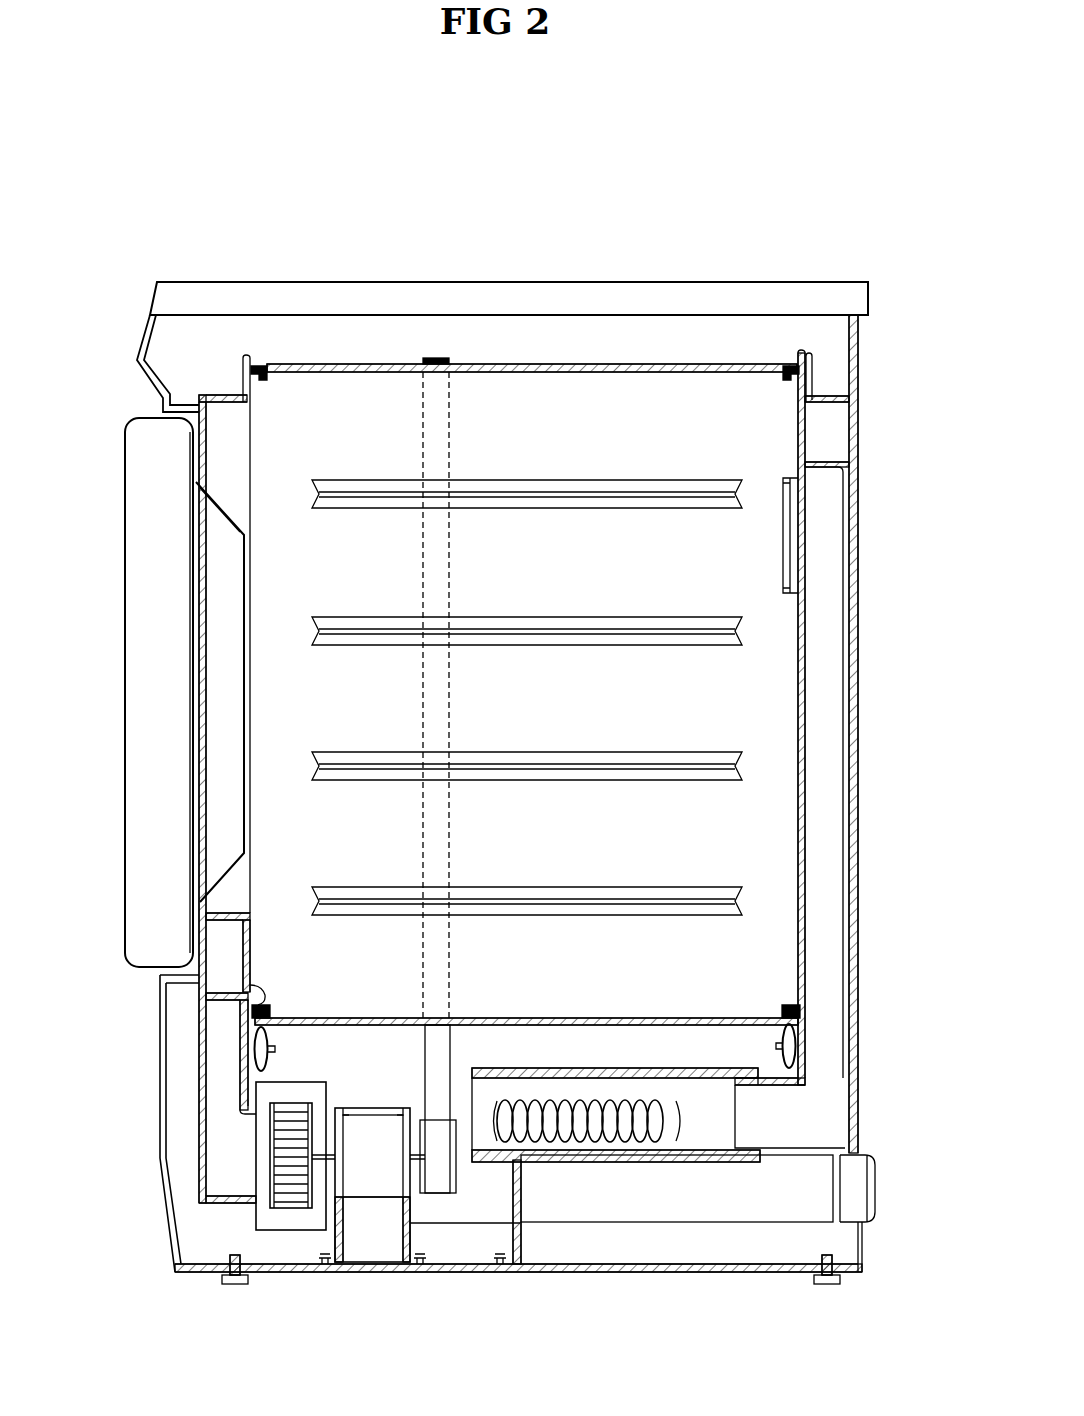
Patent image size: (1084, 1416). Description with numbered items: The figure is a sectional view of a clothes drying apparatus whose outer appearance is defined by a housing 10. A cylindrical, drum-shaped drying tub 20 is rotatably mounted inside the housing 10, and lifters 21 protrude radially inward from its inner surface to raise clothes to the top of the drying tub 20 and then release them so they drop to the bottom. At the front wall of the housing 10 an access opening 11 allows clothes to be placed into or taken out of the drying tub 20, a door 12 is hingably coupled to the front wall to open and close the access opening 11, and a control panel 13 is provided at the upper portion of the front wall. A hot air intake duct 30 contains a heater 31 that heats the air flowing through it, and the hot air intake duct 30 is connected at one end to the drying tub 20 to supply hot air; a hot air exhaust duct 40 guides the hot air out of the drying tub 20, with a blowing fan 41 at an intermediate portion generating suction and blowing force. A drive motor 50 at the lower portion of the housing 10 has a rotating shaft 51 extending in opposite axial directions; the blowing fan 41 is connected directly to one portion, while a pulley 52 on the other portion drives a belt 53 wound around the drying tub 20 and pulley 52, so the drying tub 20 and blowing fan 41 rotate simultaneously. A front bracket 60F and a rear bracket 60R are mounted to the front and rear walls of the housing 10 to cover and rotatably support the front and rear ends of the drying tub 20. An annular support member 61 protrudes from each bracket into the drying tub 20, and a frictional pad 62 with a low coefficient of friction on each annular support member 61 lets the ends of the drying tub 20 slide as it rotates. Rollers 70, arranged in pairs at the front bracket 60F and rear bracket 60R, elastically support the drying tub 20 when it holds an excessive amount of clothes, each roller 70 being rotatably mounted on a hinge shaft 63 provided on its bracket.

The housing 10 is at (693, 274).
The access opening 11 is at (206, 473).
The door 12 is at (135, 628).
The control panel 13 is at (142, 352).
The drying tub 20 is at (590, 362).
The lifters 21 is at (592, 485).
The hot air intake duct 30 is at (797, 1108).
The heater 31 is at (585, 1132).
The hot air exhaust duct 40 is at (648, 1202).
The blowing fan 41 is at (293, 1195).
The drive motor 50 is at (373, 1185).
The rotating shaft 51 is at (427, 1172).
The pulley 52 is at (458, 1165).
The belt 53 is at (453, 355).
The front bracket 60F is at (245, 1042).
The rear bracket 60R is at (806, 668).
The annular support member 61 is at (258, 384).
The frictional pad 62 is at (256, 352).
The hinge shafts 63 is at (276, 1049).
The rollers 70 is at (255, 1066).